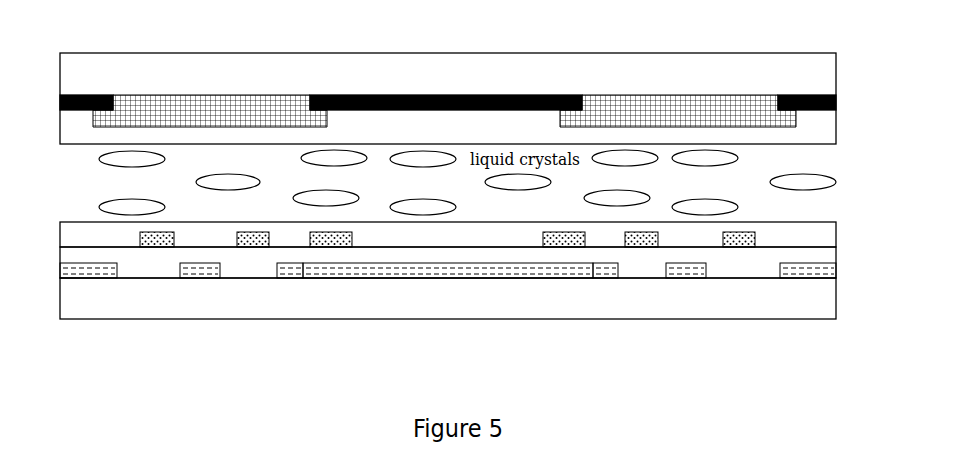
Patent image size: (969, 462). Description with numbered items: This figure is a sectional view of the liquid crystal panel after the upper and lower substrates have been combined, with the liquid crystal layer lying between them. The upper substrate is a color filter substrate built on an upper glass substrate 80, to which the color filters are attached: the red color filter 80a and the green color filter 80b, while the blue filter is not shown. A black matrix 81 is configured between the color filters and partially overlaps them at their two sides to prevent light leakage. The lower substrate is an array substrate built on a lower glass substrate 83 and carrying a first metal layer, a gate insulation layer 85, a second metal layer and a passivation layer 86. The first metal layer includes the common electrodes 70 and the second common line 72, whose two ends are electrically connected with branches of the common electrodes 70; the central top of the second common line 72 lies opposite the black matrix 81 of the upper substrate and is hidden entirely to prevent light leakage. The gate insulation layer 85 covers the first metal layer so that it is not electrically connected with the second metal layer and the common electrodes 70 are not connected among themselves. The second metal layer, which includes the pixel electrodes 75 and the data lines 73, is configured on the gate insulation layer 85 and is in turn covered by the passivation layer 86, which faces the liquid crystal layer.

The upper glass substrate 80 is at (302, 77).
The red color filter 80a is at (147, 97).
The green color filter 80b is at (650, 107).
The black matrix 81 is at (448, 93).
The passivation layer 86 is at (805, 230).
The gate insulation layer 85 is at (762, 262).
The lower glass substrate 83 is at (785, 292).
The pixel electrodes 75 is at (157, 247).
The data lines 73 is at (335, 247).
The common electrodes 70 is at (207, 273).
The second common line 72 is at (480, 273).